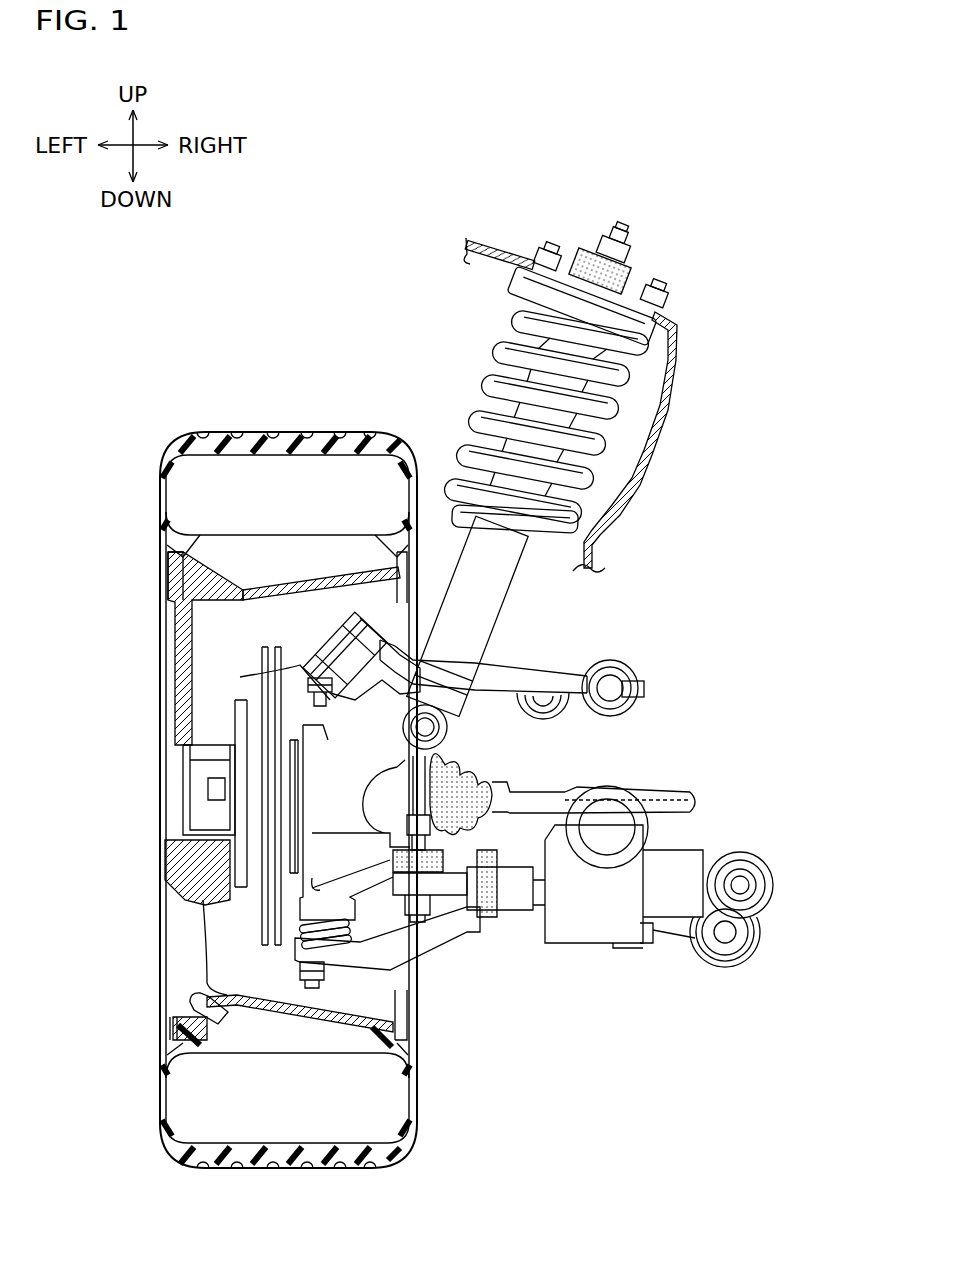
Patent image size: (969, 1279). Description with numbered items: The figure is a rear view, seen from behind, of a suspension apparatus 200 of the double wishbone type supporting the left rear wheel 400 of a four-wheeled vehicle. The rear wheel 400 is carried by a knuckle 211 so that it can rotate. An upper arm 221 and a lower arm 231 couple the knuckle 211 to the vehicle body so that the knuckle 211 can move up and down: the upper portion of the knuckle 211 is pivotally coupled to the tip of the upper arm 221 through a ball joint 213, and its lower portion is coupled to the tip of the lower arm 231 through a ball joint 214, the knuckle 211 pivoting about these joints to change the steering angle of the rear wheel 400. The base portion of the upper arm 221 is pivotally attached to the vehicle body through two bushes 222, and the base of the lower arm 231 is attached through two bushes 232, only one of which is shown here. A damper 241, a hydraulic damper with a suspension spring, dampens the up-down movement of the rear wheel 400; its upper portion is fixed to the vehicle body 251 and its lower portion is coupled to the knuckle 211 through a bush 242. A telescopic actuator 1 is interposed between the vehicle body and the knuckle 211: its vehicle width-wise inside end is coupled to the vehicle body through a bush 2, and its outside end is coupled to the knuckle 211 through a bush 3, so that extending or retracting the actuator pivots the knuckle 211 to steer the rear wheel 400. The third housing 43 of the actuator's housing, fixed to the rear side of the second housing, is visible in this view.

The telescopic actuator 1 is at (597, 937).
The bush 2 is at (763, 895).
The bush 3 is at (433, 892).
The suspension apparatus 200 is at (372, 352).
The knuckle 211 is at (240, 677).
The ball joint 213 is at (332, 645).
The ball joint 214 is at (296, 935).
The upper arm 221 is at (506, 660).
The bushes 222 is at (549, 713).
The lower arm 231 is at (498, 912).
The bush 232 is at (740, 943).
The damper 241 is at (450, 420).
The bush 242 is at (432, 728).
The vehicle body 251 is at (682, 372).
The rear wheel 400 is at (287, 430).
The third housing 43 is at (608, 828).